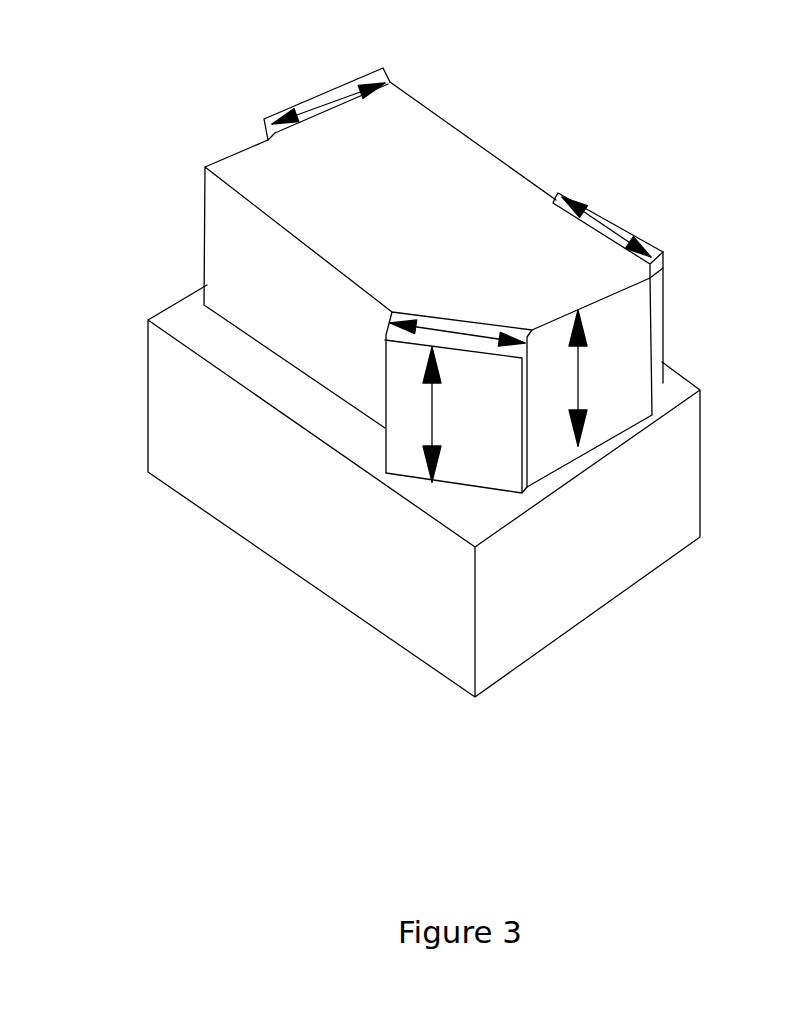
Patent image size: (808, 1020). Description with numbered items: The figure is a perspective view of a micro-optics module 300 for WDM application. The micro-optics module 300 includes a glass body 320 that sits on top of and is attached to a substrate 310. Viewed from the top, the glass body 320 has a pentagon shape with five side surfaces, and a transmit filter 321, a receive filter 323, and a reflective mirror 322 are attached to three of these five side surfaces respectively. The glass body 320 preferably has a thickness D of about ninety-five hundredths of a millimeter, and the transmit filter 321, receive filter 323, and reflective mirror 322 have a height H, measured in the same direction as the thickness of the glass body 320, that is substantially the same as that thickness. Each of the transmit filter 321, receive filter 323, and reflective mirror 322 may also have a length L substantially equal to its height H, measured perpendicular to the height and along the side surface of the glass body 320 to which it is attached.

The micro-optics module 300 is at (438, 402).
The substrate 310 is at (560, 573).
The glass body 320 is at (438, 307).
The transmit (Tx) filter 321 is at (324, 91).
The reflective mirror 322 is at (430, 433).
The receive (Rx) filter 323 is at (615, 217).